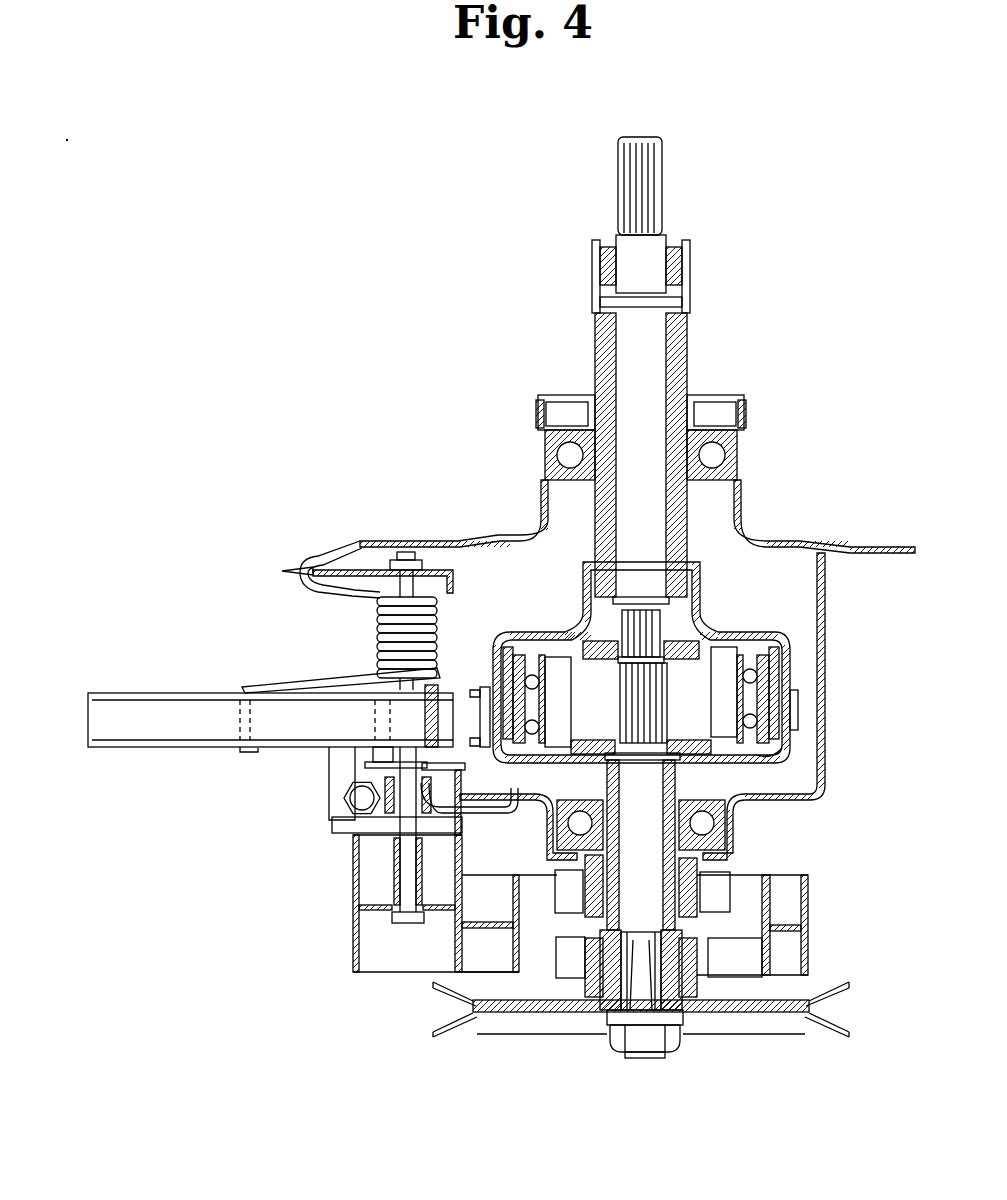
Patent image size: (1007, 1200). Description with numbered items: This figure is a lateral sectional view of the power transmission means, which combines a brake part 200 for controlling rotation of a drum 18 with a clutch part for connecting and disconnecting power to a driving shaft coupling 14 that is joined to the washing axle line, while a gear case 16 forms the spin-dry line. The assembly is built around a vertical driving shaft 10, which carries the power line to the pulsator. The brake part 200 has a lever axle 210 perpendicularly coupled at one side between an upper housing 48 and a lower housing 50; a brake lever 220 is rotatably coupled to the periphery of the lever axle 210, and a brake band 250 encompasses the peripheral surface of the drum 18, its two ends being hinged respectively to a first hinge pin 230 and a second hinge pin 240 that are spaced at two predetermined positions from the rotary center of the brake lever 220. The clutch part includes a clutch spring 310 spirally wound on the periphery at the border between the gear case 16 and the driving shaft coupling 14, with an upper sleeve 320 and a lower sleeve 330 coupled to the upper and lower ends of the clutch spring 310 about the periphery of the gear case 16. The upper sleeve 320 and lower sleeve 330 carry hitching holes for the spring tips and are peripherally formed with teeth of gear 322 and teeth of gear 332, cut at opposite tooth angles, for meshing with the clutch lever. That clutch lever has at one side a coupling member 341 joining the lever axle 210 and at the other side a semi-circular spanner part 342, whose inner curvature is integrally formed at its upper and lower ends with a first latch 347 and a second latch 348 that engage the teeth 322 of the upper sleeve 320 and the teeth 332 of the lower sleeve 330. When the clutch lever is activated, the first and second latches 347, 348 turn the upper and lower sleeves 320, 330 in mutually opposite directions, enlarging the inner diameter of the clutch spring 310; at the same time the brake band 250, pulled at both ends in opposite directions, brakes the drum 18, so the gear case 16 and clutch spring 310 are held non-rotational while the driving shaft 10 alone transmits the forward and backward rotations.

The driving shaft 10 is at (645, 800).
The driving shaft coupling 14 is at (617, 1000).
The gear case 16 is at (758, 766).
The drum 18 is at (783, 672).
The upper housing 48 is at (780, 540).
The lower housing 50 is at (822, 586).
The brake part 200 is at (493, 450).
The lever axle 210 is at (403, 580).
The brake lever 220 is at (118, 693).
The first hinge pin 230 is at (377, 755).
The second hinge pin 240 is at (433, 768).
The brake band 250 is at (478, 718).
The clutch spring 310 is at (592, 955).
The upper sleeve 320 is at (700, 870).
The teeth of gear 322 is at (718, 900).
The lower sleeve 330 is at (597, 1000).
The teeth of gear 332 is at (565, 972).
The coupling member 341 is at (353, 923).
The spanner part 342 is at (808, 965).
The first latch 347 is at (547, 893).
The second latch 348 is at (743, 960).